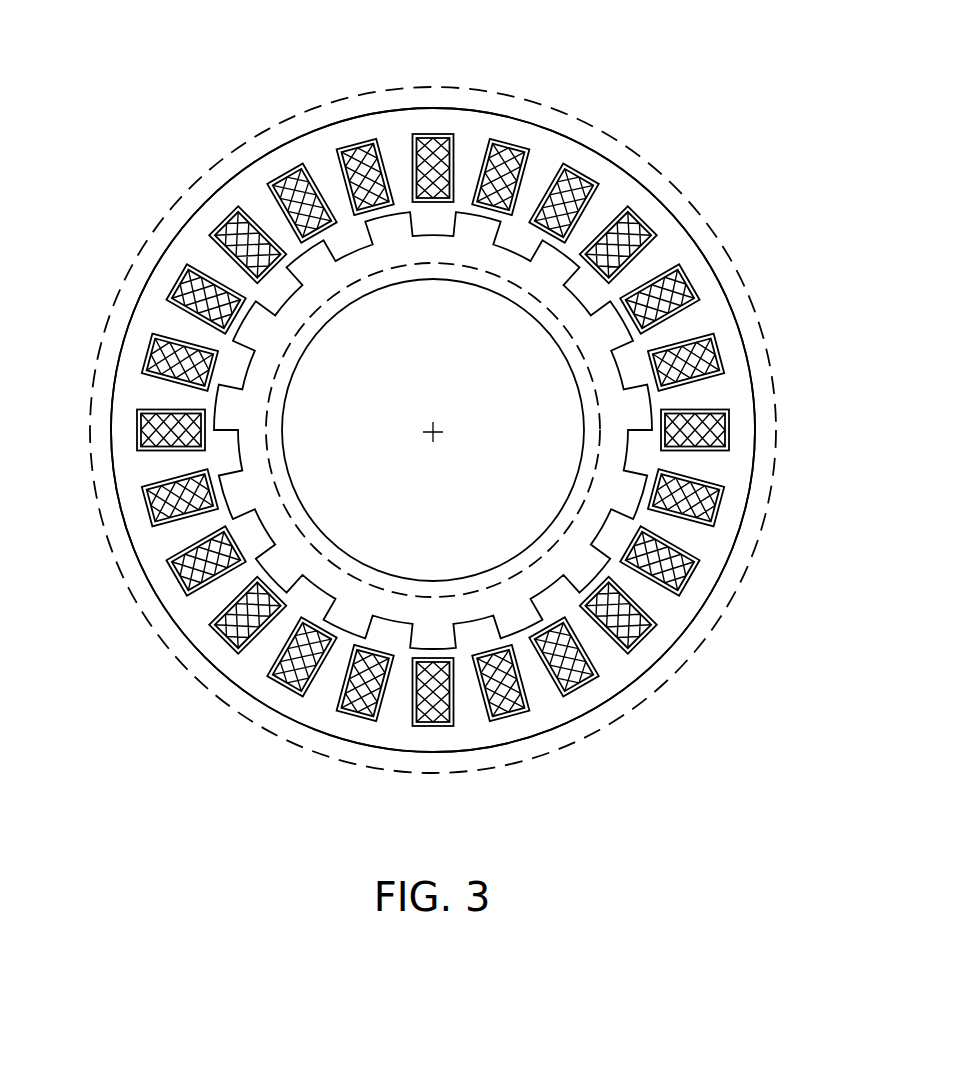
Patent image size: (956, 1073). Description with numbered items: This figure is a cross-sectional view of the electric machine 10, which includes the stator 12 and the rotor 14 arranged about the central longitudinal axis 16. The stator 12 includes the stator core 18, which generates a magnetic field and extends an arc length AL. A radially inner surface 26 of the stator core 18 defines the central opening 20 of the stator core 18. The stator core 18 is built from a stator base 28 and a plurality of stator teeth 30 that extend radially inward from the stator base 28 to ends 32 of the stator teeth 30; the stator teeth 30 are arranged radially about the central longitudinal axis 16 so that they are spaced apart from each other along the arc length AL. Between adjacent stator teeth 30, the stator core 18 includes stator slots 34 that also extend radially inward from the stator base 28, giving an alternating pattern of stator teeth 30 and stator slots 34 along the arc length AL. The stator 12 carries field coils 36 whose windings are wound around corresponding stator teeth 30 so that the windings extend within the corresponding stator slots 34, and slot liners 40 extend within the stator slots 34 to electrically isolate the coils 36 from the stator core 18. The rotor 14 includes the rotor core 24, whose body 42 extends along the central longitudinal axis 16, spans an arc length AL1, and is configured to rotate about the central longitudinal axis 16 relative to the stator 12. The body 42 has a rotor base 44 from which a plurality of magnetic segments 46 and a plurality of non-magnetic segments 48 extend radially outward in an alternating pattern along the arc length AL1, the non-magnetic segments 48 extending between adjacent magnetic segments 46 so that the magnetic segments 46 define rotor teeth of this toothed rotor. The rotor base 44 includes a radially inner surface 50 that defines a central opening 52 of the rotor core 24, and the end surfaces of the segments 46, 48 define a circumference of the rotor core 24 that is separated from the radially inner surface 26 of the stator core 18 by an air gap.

The electric machine 10 is at (718, 64).
The stator 12 is at (677, 207).
The rotor 14 is at (300, 482).
The central longitudinal axis 16 is at (435, 426).
The stator core 18 is at (234, 189).
The central opening 20 is at (260, 563).
The rotor core 24 is at (421, 577).
The radially inner surface 26 is at (363, 610).
The stator base 28 is at (447, 747).
The stator teeth 30 is at (218, 341).
The ends of stator teeth 32 is at (347, 233).
The stator slots 34 is at (412, 148).
The field coils 36 is at (166, 334).
The slot liners 40 is at (578, 187).
The body 42 is at (466, 587).
The rotor base 44 is at (265, 453).
The magnetic segments 46 is at (488, 222).
The non-magnetic segments 48 is at (440, 218).
The radially inner surface 50 is at (332, 318).
The central opening 52 is at (405, 288).
The arc length AL is at (464, 83).
The arc length AL1 is at (700, 450).